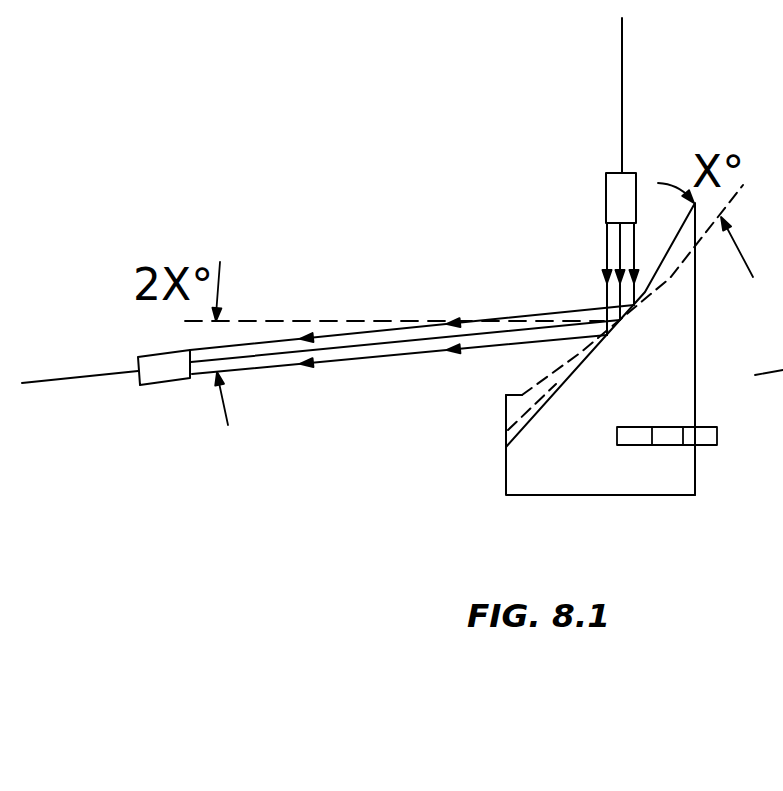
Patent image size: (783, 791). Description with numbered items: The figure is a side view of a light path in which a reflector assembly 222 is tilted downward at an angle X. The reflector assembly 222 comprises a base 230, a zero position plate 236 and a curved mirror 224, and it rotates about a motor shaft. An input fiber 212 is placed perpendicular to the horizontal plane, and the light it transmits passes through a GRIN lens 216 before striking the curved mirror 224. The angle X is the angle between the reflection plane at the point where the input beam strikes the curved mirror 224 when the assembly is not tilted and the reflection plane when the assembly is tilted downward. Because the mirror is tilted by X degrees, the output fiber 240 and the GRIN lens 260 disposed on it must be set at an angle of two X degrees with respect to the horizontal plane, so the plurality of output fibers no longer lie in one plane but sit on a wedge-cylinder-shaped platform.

The input fiber 212 is at (622, 53).
The GRIN lens 216 is at (606, 194).
The curved mirror 224 is at (683, 252).
The reflector assembly 222 is at (462, 485).
The base 230 is at (558, 478).
The zero position plate 236 is at (705, 436).
The output fiber 240 is at (55, 378).
The GRIN lens 260 is at (157, 380).